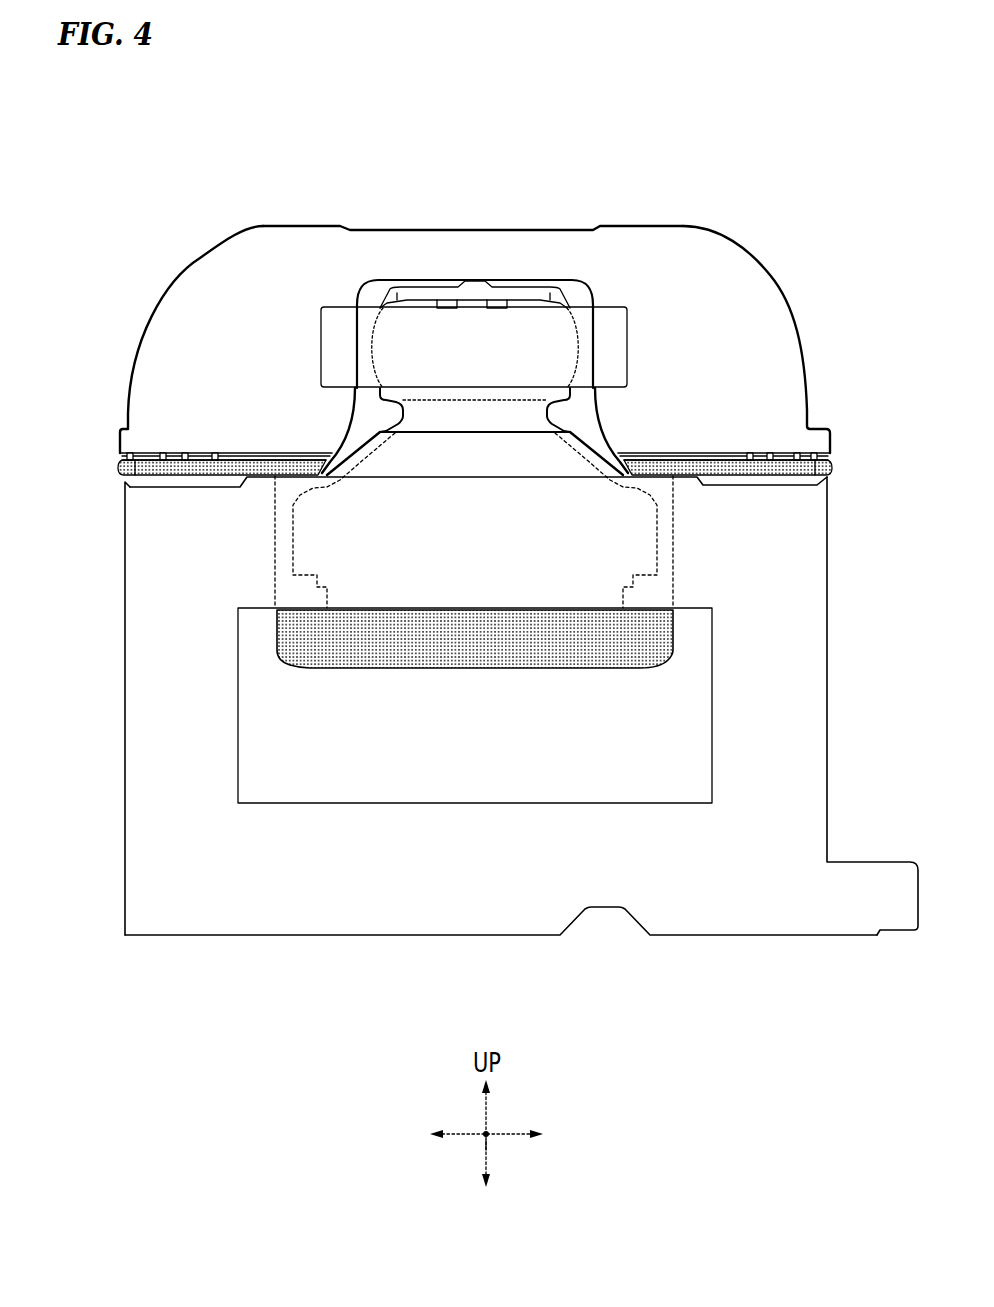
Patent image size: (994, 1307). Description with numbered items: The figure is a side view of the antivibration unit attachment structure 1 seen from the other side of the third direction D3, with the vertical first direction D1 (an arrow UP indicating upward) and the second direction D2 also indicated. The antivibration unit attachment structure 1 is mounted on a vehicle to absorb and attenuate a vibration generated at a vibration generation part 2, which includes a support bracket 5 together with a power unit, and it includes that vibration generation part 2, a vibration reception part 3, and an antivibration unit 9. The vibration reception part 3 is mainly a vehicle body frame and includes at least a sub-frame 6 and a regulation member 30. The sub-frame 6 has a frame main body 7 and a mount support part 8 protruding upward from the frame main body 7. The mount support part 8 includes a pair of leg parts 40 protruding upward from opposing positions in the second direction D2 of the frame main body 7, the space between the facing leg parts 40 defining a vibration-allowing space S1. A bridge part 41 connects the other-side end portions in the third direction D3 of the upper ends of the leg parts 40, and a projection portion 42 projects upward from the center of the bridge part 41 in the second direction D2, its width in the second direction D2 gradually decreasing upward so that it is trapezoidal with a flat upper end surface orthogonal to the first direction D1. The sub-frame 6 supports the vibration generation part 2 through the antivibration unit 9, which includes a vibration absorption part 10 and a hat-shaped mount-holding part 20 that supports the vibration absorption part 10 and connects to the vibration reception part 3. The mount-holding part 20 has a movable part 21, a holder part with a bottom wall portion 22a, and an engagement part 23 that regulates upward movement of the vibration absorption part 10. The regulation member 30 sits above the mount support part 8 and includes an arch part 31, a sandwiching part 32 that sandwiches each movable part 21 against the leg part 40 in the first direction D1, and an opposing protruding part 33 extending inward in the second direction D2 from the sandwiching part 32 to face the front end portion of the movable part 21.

The antivibration unit attachment structure 1 is at (473, 548).
The vibration generation part 2 is at (494, 250).
The vibration reception part 3 is at (473, 761).
The support bracket 5 is at (527, 333).
The sub-frame 6 is at (473, 750).
The frame main body 7 is at (227, 935).
The mount support part 8 is at (137, 740).
The antivibration unit 9 is at (683, 637).
The vibration absorption part 10 is at (397, 284).
The mount-holding part 20 is at (475, 690).
The movable part 21 is at (220, 473).
The bottom wall portion 22a is at (418, 637).
The engagement part 23 is at (303, 458).
The regulation member 30 is at (793, 285).
The arch part 31 is at (482, 248).
The sandwiching part 32 is at (747, 432).
The opposing protruding part 33 is at (625, 447).
The leg part 40 is at (203, 733).
The bridge part 41 is at (473, 558).
The projection portion 42 is at (503, 450).
The vibration-allowing space S1 is at (562, 814).
The first direction D1 is at (487, 1110).
The second direction D2 is at (463, 1132).
The third direction D3 is at (490, 1137).